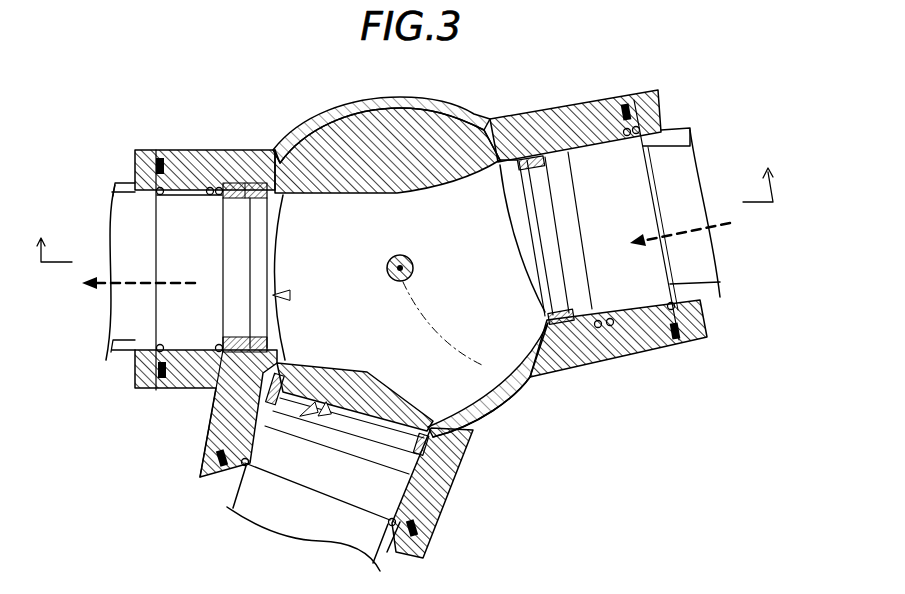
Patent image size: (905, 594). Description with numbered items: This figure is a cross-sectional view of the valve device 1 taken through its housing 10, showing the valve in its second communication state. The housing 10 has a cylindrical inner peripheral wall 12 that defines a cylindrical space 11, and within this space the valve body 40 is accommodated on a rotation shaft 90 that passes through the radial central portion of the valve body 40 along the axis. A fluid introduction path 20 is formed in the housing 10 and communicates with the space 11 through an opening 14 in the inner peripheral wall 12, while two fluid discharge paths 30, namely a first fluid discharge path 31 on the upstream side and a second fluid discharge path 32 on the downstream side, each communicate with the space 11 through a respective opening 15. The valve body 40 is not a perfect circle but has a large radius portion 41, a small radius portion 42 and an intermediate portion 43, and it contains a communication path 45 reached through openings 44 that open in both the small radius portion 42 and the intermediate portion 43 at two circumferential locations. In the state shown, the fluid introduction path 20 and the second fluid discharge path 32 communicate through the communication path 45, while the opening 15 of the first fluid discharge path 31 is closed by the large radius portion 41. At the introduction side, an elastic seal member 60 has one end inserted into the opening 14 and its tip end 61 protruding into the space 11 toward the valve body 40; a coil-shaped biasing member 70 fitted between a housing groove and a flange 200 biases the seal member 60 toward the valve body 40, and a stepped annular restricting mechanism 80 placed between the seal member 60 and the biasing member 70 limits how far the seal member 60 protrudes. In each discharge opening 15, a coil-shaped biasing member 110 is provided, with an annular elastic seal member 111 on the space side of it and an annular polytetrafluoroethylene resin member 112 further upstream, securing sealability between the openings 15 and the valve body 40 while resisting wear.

The valve device 1 is at (157, 112).
The housing 10 is at (543, 107).
The cylindrical space 11 is at (520, 362).
The inner peripheral wall 12 is at (527, 397).
The opening 14 is at (528, 219).
The opening 15 is at (276, 250).
The fluid introduction path 20 is at (645, 176).
The flange 200 is at (706, 322).
The fluid discharge path 30 is at (212, 378).
The first fluid discharge path 31 is at (293, 482).
The second fluid discharge path 32 is at (162, 313).
The valve body 40 is at (313, 410).
The large radius portion 41 is at (330, 148).
The small radius portion 42 is at (267, 273).
The intermediate portion 43 is at (280, 226).
The opening 44 is at (280, 295).
The communication path 45 is at (326, 284).
The seal member 60 is at (548, 320).
The tip end 61 is at (520, 190).
The biasing member 70 is at (612, 320).
The restricting mechanism 80 is at (610, 318).
The rotation shaft 90 is at (396, 256).
The biasing member 110 is at (177, 360).
The seal member 111 is at (238, 183).
The resin member 112 is at (272, 186).